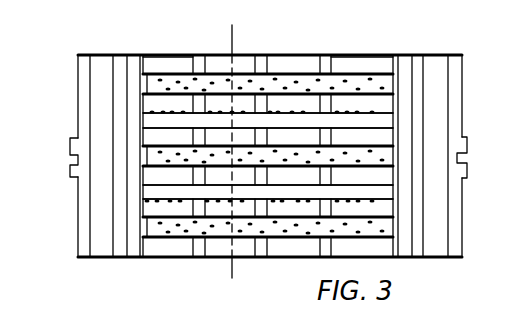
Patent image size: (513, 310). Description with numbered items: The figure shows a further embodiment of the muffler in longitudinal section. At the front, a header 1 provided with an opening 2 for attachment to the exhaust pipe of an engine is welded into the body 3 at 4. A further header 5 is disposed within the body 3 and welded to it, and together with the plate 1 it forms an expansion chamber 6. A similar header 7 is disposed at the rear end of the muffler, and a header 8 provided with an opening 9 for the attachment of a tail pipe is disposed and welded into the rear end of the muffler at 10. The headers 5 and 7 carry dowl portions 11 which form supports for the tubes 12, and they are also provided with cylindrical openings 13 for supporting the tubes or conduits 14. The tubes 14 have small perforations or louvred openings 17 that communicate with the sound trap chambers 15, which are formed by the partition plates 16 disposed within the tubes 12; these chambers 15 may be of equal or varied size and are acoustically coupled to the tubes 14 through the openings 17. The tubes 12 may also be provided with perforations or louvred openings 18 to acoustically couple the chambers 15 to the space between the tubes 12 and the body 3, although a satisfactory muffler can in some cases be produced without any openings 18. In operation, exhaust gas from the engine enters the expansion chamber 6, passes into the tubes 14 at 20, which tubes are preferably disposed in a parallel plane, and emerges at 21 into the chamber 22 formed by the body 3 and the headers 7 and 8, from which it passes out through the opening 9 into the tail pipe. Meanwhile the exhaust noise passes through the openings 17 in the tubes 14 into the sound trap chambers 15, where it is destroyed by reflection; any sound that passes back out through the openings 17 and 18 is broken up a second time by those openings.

The header 1 is at (88, 81).
The opening 2 is at (70, 168).
The body 3 is at (100, 258).
The weld 4 is at (58, 263).
The further header 5 is at (113, 77).
The expansion chamber 6 is at (98, 63).
The header 7 is at (413, 79).
The header 8 is at (449, 78).
The opening 9 is at (463, 151).
The weld 10 is at (391, 67).
The dowl portions 11 is at (143, 66).
The tubes 12 is at (300, 115).
The cylindrical openings 13 is at (152, 74).
The tubes 14 is at (272, 75).
The sound trap chambers 15 is at (245, 64).
The partition plates 16 is at (203, 71).
The perforations or louvred openings 17 is at (300, 95).
The perforations or louvred openings 18 is at (187, 109).
The tube inlet 20 is at (146, 88).
The tube outlet 21 is at (392, 92).
The chamber 22 is at (438, 248).